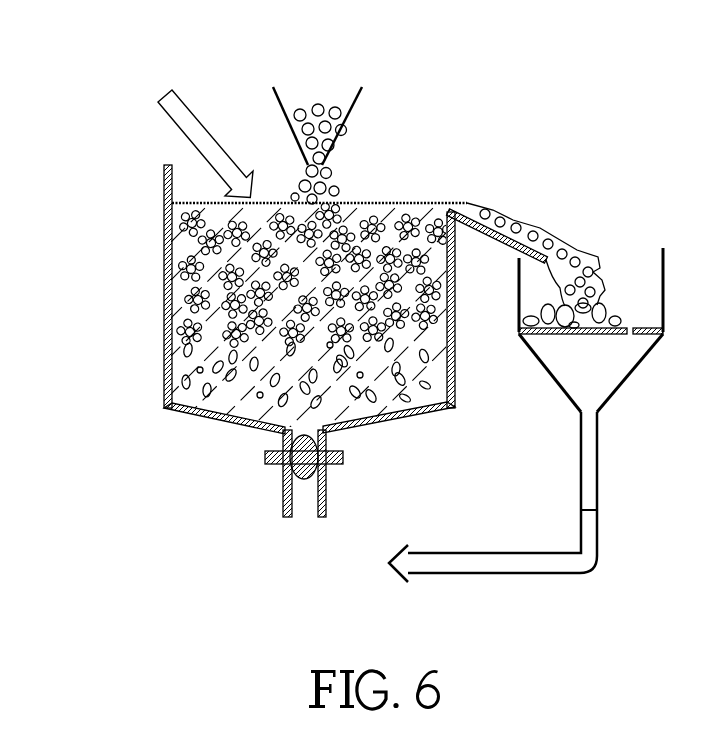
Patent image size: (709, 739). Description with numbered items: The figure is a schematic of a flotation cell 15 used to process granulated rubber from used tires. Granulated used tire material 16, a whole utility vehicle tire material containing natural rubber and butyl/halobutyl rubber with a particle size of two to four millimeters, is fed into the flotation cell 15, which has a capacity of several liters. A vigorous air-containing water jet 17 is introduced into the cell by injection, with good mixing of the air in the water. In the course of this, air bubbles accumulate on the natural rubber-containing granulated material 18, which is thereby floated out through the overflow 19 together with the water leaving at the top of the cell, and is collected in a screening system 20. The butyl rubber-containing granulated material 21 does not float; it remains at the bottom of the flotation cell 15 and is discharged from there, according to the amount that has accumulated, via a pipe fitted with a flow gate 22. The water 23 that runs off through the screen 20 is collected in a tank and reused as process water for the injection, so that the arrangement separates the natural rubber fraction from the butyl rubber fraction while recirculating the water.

The flotation cell 15 is at (164, 178).
The granulated used tire material 16 is at (320, 107).
The air-containing water jet 17 is at (163, 93).
The natural rubber-containing granulated material 18 is at (372, 203).
The overflow 19 is at (508, 230).
The screening system 20 is at (552, 336).
The butyl rubber-containing granulated material 21 is at (363, 428).
The flow gate 22 is at (262, 482).
The water 23 is at (600, 510).